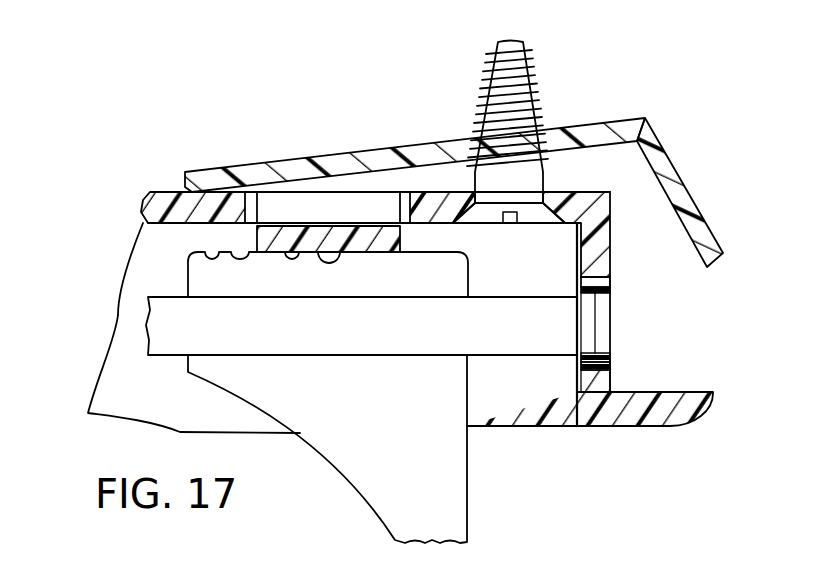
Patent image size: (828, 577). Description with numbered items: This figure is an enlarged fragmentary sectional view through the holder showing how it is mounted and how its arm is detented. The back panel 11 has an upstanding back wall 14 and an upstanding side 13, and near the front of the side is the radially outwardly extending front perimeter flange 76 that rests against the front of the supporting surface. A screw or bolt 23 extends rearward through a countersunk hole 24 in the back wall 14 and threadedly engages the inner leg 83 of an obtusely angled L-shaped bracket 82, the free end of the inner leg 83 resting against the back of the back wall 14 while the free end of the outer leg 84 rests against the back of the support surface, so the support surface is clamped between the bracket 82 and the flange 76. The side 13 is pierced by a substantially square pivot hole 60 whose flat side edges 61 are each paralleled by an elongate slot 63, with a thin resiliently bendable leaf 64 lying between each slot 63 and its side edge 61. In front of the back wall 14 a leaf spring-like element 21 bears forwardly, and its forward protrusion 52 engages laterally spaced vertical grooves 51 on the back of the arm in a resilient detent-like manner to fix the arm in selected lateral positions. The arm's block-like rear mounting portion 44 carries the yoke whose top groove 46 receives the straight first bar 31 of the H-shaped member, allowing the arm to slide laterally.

The back panel 11 is at (622, 223).
The back panel sides 13 is at (607, 253).
The back wall 14 is at (168, 204).
The leaf spring-like element 21 is at (380, 253).
The screw or bolt 23 is at (511, 184).
The countersunk hole 24 is at (536, 194).
The first bar 31 is at (160, 322).
The rear mounting portion 44 is at (362, 440).
The top groove 46 is at (585, 313).
The vertical grooves 51 is at (206, 251).
The forward protrusion 52 is at (297, 260).
The pivot hole 60 is at (582, 352).
The side edge 61 is at (605, 340).
The slot 63 is at (603, 358).
The resilient leaf 64 is at (603, 367).
The front perimeter flange 76 is at (667, 410).
The L-shaped bracket 82 is at (362, 158).
The inner leg 83 is at (445, 147).
The outer leg 84 is at (658, 158).